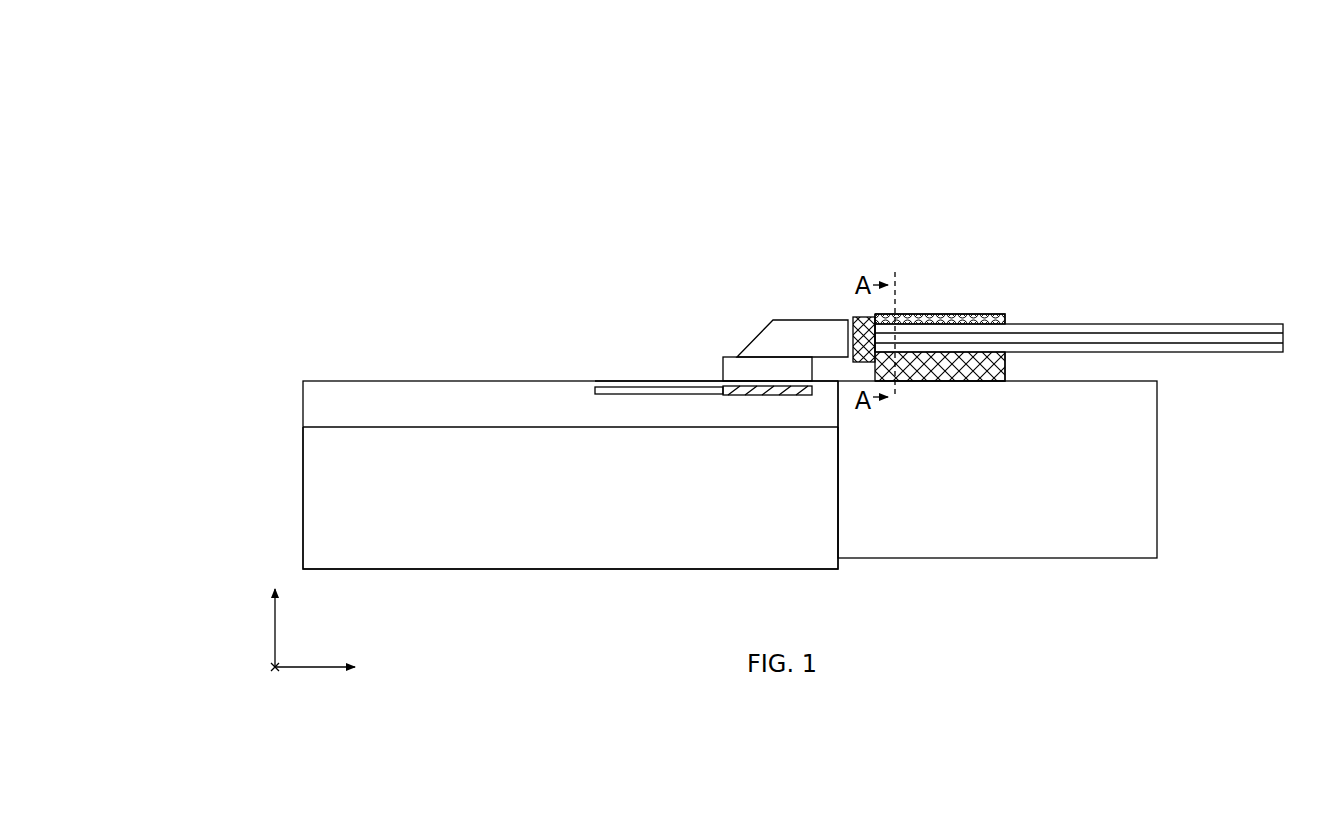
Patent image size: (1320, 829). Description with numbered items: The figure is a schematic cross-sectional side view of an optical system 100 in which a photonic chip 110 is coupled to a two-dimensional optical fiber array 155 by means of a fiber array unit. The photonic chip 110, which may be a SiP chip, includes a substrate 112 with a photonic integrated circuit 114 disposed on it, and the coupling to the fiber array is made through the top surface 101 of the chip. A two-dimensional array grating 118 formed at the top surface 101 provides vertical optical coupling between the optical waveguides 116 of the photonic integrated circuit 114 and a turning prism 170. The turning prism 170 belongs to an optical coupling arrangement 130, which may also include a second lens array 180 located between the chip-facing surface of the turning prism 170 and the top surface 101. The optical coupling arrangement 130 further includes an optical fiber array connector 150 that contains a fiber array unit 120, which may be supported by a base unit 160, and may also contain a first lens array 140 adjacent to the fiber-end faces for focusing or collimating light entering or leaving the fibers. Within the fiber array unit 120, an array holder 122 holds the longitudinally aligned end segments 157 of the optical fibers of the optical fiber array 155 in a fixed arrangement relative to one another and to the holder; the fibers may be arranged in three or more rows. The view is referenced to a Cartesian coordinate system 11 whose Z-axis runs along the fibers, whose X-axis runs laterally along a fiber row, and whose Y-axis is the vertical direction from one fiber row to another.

The optical system 100 is at (772, 60).
The photonic chip 110 is at (430, 350).
The substrate 112 is at (528, 506).
The photonic integrated circuit 114 is at (528, 416).
The optical waveguides 116 is at (640, 386).
The 2D array grating 118 is at (773, 396).
The top surface 101 is at (622, 373).
The fiber array unit 120 is at (961, 303).
The array holder 122 is at (926, 313).
The optical coupling arrangement 130 is at (754, 191).
The first lens array 140 is at (851, 315).
The optical fiber array connector 150 is at (1001, 284).
The optical fiber array 155 is at (1127, 324).
The end segments 157 is at (934, 366).
The base unit 160 is at (957, 486).
The turning prism 170 is at (787, 319).
The second lens array 180 is at (722, 366).
The coordinate system 11 is at (288, 700).